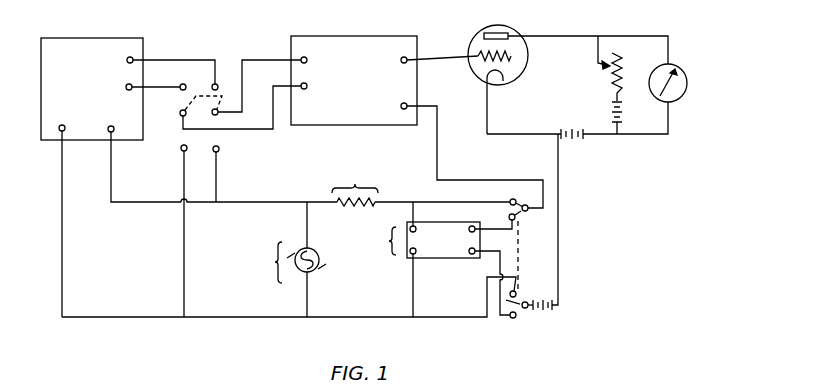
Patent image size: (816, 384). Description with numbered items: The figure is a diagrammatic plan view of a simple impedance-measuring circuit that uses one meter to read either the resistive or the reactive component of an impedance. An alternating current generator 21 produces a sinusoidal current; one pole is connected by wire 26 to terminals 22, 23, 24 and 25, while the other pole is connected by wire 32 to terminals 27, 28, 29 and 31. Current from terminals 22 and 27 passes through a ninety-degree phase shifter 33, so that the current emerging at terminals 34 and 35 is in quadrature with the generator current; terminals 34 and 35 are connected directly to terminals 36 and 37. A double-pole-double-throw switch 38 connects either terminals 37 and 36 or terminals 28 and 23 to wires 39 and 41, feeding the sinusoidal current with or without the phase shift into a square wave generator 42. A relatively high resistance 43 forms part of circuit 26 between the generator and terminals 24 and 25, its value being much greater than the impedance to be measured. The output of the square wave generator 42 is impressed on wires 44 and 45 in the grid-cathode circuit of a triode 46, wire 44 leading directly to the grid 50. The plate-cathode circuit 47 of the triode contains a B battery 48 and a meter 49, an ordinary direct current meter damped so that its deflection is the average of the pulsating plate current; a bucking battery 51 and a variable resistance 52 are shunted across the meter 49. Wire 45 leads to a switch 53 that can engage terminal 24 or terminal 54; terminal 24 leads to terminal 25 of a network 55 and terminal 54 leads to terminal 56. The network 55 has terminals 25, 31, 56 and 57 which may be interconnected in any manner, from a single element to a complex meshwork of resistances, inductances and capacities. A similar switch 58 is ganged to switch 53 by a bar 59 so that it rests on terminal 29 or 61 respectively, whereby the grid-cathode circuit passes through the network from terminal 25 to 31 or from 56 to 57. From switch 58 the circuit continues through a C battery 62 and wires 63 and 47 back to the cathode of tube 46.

The alternating current generator 21 is at (320, 258).
The terminal 22 is at (113, 132).
The terminal 23 is at (218, 152).
The terminal 24 is at (510, 199).
The terminal 25 is at (409, 226).
The wire 26 is at (257, 202).
The terminal 27 is at (64, 132).
The terminal 28 is at (182, 152).
The terminal 29 is at (521, 283).
The terminal 31 is at (409, 254).
The wire 32 is at (240, 316).
The 90° phase shifter 33 is at (84, 40).
The terminal 34 is at (135, 58).
The terminal 35 is at (135, 91).
The terminal 36 is at (218, 83).
The terminal 37 is at (188, 84).
The double-pole-double-throw switch 38 is at (201, 112).
The wire 39 is at (246, 59).
The wire 41 is at (237, 131).
The square wave generator 42 is at (327, 37).
The resistance 43 is at (352, 207).
The wire 44 is at (430, 59).
The wire 45 is at (423, 105).
The triode 46 is at (516, 34).
The plate-cathode circuit 47 is at (586, 35).
The B battery 48 is at (578, 138).
The meter 49 is at (684, 95).
The grid 50 is at (512, 58).
The bucking battery 51 is at (613, 108).
The variable resistance 52 is at (609, 75).
The switch 53 is at (523, 204).
The terminal 54 is at (509, 216).
The network 55 is at (447, 258).
The terminal 56 is at (470, 226).
The terminal 57 is at (477, 254).
The switch 58 is at (526, 308).
The bar 59 is at (521, 249).
The terminal 61 is at (515, 318).
The C battery 62 is at (549, 307).
The wire 63 is at (559, 219).